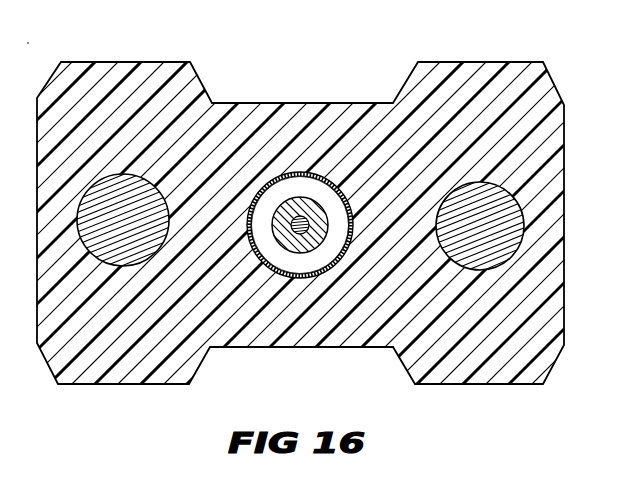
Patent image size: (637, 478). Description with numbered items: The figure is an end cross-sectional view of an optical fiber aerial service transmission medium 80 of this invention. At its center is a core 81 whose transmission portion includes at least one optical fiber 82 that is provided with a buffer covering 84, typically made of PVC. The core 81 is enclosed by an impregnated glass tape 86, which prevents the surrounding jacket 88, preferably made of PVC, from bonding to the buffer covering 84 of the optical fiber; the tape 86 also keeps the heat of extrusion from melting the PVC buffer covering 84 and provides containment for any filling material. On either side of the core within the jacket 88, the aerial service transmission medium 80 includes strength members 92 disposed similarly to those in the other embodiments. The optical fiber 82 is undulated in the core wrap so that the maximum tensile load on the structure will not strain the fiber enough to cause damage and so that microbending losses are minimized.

The aerial service transmission medium 80 is at (318, 229).
The core 81 is at (309, 186).
The optical fiber 82 is at (287, 198).
The buffer covering 84 is at (285, 240).
The impregnated glass tape 86 is at (327, 274).
The jacket 88 is at (125, 67).
The strength members 92 is at (507, 240).